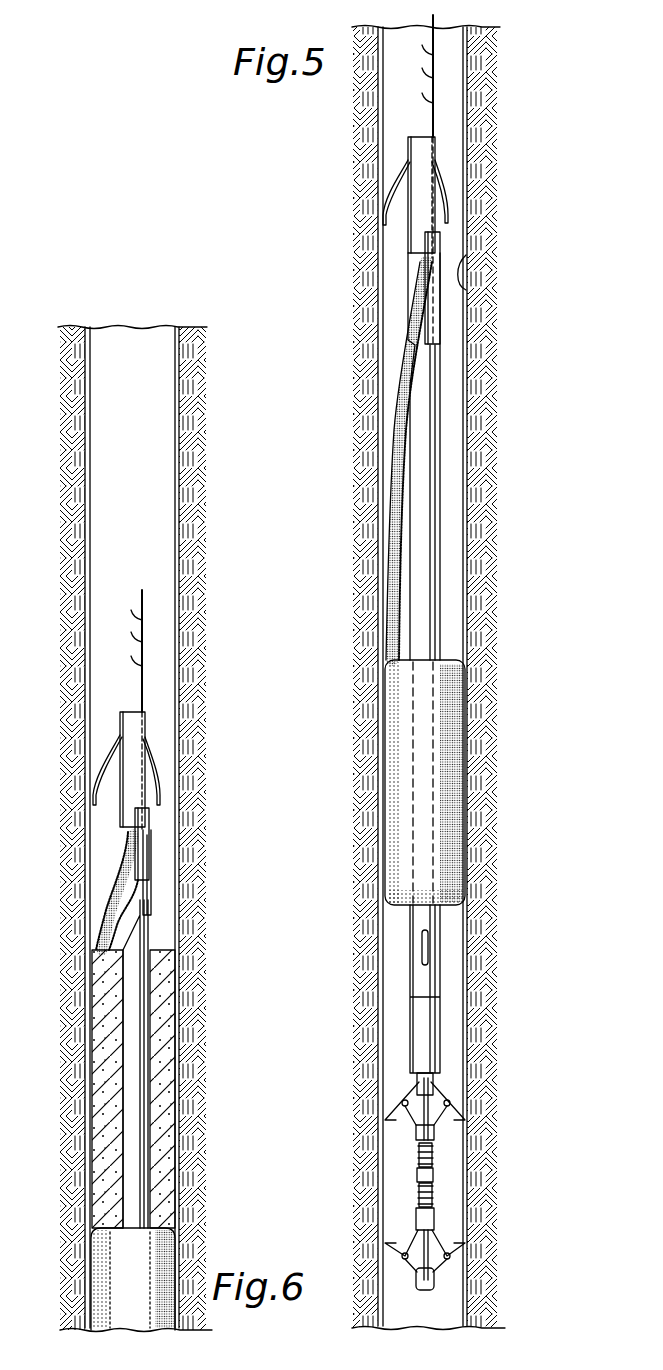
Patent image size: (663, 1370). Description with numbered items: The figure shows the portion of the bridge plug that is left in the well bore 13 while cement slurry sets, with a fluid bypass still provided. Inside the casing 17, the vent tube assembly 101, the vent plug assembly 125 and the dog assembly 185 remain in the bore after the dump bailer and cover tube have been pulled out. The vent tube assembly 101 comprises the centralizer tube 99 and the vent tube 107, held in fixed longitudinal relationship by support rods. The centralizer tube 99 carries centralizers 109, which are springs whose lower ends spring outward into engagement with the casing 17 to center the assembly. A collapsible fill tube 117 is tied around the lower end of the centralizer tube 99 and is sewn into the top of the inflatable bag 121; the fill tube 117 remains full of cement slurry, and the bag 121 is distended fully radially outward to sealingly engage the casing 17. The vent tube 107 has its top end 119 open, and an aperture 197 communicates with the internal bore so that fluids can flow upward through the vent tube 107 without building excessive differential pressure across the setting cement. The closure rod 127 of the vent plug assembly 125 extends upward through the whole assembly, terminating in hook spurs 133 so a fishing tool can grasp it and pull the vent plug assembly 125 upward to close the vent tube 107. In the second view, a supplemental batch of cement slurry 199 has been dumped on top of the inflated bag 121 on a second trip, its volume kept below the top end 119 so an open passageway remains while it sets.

In FIG. 5, the well bore 13 is at (470, 250).
In FIG. 5, the casing 17 is at (477, 786).
In FIG. 6, the casing 17 is at (190, 768).
In FIG. 5, the centralizer tube 99 is at (422, 236).
In FIG. 6, the centralizer tube 99 is at (130, 806).
In FIG. 5, the vent tube assembly 101 is at (448, 160).
In FIG. 5, the vent tube 107 is at (423, 432).
In FIG. 6, the vent tube 107 is at (135, 1067).
In FIG. 5, the centralizers 109 is at (402, 180).
In FIG. 6, the centralizers 109 is at (110, 742).
In FIG. 5, the collapsible fill tube 117 is at (405, 328).
In FIG. 6, the collapsible fill tube 117 is at (110, 866).
In FIG. 6, the top end 119 is at (152, 878).
In FIG. 5, the inflatable bag 121 is at (447, 662).
In FIG. 6, the inflatable bag 121 is at (123, 1273).
In FIG. 5, the vent plug assembly 125 is at (452, 941).
In FIG. 5, the closure rod 127 is at (436, 80).
In FIG. 6, the closure rod 127 is at (143, 657).
In FIG. 5, the hook spurs 133 is at (424, 70).
In FIG. 6, the hook spurs 133 is at (131, 620).
In FIG. 5, the dog assembly 185 is at (448, 1168).
In FIG. 5, the aperture 197 is at (425, 950).
In FIG. 6, the supplemental batch of cement slurry 199 is at (165, 1075).